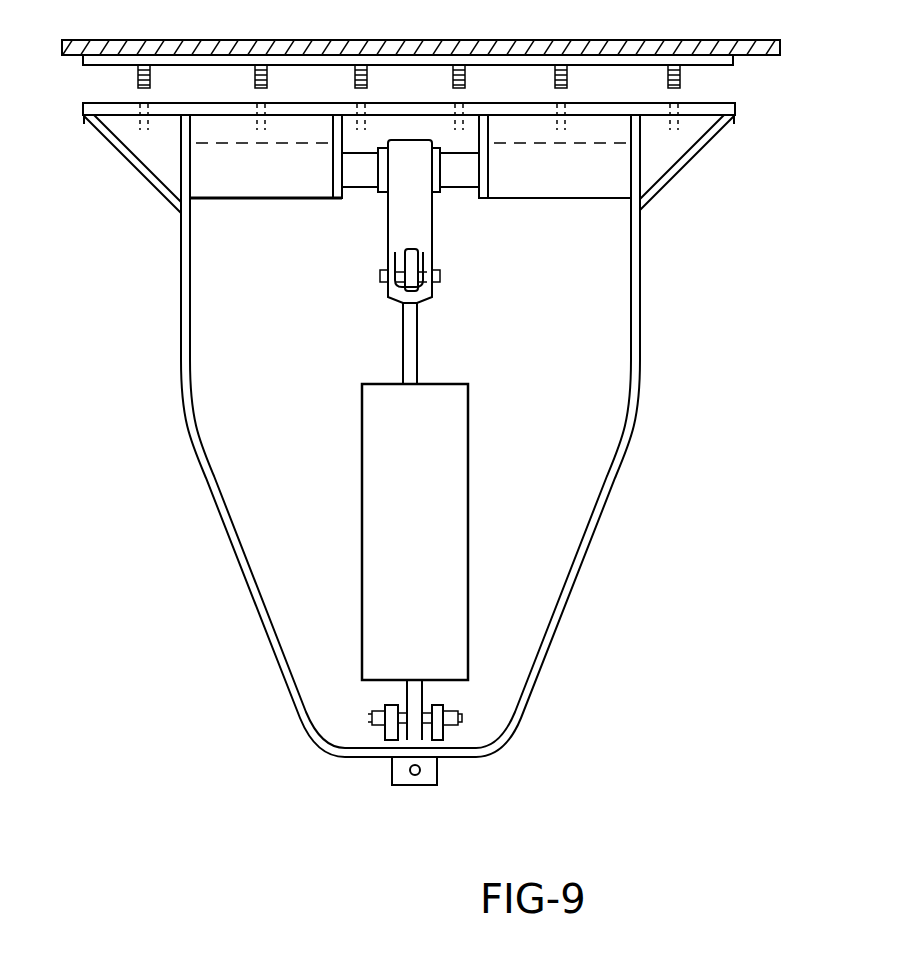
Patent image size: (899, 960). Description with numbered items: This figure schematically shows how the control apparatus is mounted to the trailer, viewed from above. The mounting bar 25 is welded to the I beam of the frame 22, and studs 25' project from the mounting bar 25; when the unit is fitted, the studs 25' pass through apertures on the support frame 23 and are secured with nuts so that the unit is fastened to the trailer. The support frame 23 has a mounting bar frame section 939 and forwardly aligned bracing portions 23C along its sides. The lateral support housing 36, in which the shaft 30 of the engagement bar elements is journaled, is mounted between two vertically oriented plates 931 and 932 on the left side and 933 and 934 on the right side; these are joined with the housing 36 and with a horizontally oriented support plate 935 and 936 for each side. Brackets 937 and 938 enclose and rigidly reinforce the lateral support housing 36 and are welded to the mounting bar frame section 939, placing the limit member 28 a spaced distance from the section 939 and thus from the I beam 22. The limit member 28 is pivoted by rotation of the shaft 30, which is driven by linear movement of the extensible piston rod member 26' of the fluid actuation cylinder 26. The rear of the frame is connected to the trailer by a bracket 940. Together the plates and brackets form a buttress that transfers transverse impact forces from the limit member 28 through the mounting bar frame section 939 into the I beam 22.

The I beam of the frame 22 is at (525, 38).
The mounting bar 25 is at (454, 69).
The studs 25' is at (412, 97).
The mounting bar frame section 939 is at (100, 104).
The bracket 937 is at (134, 140).
The bracket 938 is at (663, 150).
The forwardly aligned bracing portion 23C is at (664, 182).
The support frame 23 is at (637, 450).
The vertically oriented plate 931 is at (191, 203).
The vertically oriented plate 934 is at (627, 202).
The horizontally oriented support plate 935 is at (285, 178).
The horizontally oriented support plate 936 is at (580, 178).
The lateral support housing 36 is at (272, 203).
The vertically oriented plate 932 is at (343, 203).
The vertically oriented plate 933 is at (486, 203).
The shaft 30 is at (365, 208).
The abutment limit element member 28 is at (420, 232).
The extensible piston rod member 26' is at (445, 343).
The fluid actuation cylinder 26 is at (444, 562).
The bracket 940 is at (435, 782).